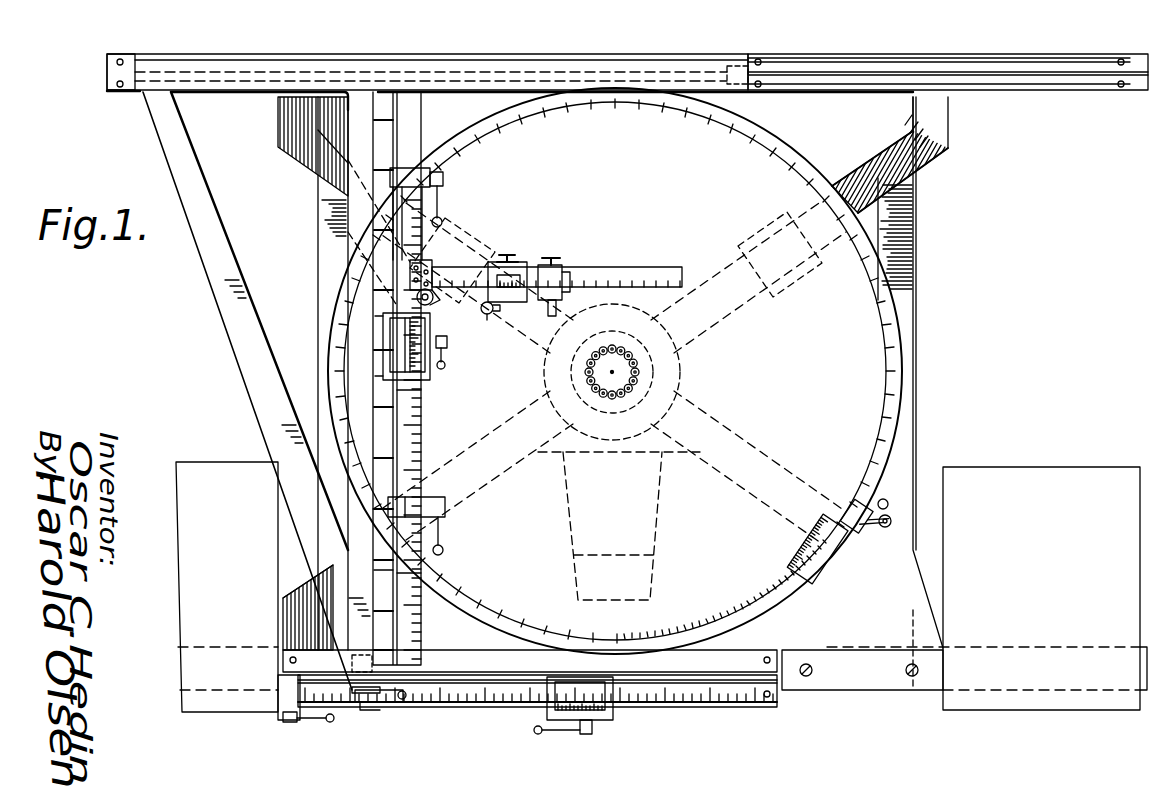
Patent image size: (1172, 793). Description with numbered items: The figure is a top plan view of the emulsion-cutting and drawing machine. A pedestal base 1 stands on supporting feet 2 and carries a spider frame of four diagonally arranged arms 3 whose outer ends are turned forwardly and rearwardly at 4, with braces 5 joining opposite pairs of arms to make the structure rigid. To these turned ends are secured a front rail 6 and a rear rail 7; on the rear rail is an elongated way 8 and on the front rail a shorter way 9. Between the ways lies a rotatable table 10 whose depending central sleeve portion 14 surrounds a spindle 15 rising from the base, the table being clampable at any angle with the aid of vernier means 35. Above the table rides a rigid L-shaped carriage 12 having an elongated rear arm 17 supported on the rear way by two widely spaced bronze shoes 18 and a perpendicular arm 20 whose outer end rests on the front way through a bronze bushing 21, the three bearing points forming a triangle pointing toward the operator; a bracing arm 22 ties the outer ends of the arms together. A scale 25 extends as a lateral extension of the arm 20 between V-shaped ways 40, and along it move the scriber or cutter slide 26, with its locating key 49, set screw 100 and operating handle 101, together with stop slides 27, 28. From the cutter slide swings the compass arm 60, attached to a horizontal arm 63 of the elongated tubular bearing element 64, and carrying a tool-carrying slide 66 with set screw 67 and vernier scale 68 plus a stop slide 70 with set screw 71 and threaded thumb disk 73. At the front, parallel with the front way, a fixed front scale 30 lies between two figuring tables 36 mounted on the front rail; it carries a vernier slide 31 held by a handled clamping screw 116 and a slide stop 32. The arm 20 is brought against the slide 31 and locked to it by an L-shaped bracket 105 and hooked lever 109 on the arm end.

The pedestal base 1 is at (642, 432).
The supporting feet 2 is at (758, 332).
The spider frame arms 3 is at (305, 160).
The turned ends of spider arms 4 is at (282, 118).
The braces 5 is at (317, 268).
The front rail 6 is at (782, 692).
The rear rail 7 is at (822, 68).
The elongated way 8 is at (872, 72).
The shorter way 9 is at (726, 680).
The rotatable table 10 is at (619, 526).
The carriage 12 is at (368, 92).
The depending central sleeve portion 14 is at (622, 332).
The spindle 15 is at (620, 376).
The elongated rear arm 17 is at (608, 68).
The bronze shoes 18 is at (135, 72).
The carriage arm 20 is at (410, 122).
The bronze bushing 21 is at (352, 660).
The bracing arm 22 is at (243, 362).
The scale 25 is at (421, 437).
The scriber or cutter slide 26 is at (425, 376).
The stop slide 27 is at (435, 175).
The stop slide 28 is at (442, 500).
The front scale 30 is at (488, 690).
The vernier slide 31 is at (547, 700).
The slide stop 32 is at (283, 718).
The vernier means 35 is at (850, 505).
The figuring tables 36 is at (206, 462).
The V-shaped ways 40 is at (374, 572).
The locating key 49 is at (383, 330).
The compass arm 60 is at (455, 268).
The horizontal arm 63 is at (432, 262).
The elongated tubular bearing element 64 is at (433, 300).
The tool-carrying slide 66 is at (440, 296).
The set screw 67 is at (512, 262).
The vernier scale 68 is at (496, 315).
The stop slide 70 is at (570, 274).
The set screw 71 is at (553, 263).
The threaded thumb disk 73 is at (553, 316).
The set screw 100 is at (448, 345).
The operating handle 101 is at (421, 396).
The L-shaped bracket 105 is at (396, 702).
The lever 109 is at (372, 702).
The handled clamping screw 116 is at (585, 735).